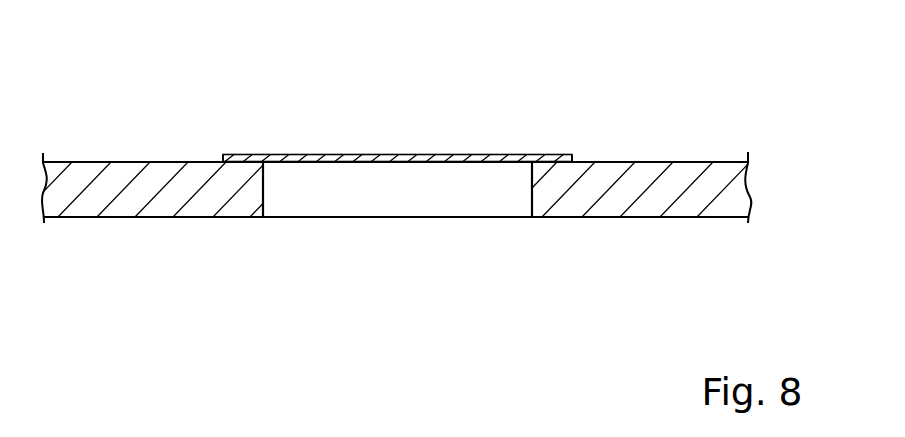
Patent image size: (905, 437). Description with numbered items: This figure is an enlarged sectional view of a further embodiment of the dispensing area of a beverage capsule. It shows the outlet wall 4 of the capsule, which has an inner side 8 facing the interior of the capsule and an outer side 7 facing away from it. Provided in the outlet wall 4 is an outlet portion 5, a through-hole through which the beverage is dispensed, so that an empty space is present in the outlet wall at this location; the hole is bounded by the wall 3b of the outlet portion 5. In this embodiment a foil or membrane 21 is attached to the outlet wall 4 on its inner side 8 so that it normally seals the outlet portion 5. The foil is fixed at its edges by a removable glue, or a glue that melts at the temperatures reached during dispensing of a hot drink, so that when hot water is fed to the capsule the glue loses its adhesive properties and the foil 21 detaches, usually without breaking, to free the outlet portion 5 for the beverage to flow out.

The inner side 8 is at (100, 162).
The outer side 7 is at (87, 217).
The outlet wall 4 is at (715, 162).
The outlet portion 5 is at (374, 223).
The wall of the outlet portion 3b is at (531, 192).
The foil or membrane 21 is at (397, 154).